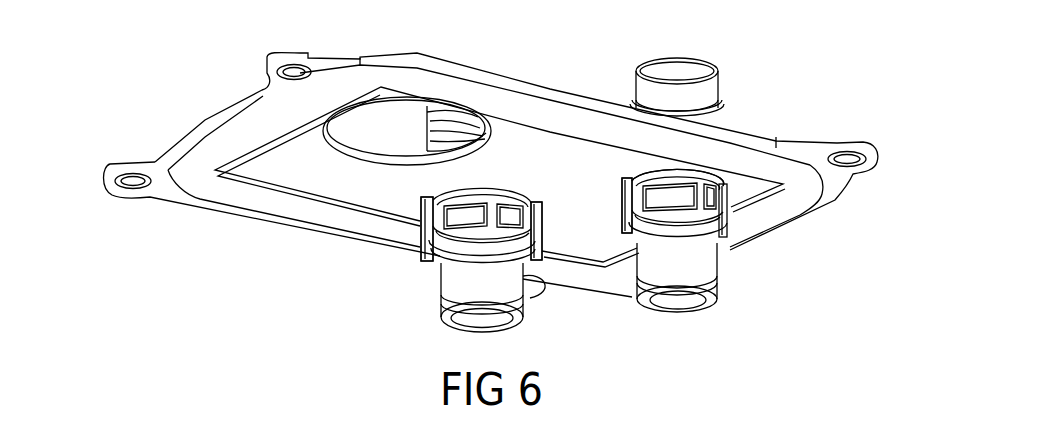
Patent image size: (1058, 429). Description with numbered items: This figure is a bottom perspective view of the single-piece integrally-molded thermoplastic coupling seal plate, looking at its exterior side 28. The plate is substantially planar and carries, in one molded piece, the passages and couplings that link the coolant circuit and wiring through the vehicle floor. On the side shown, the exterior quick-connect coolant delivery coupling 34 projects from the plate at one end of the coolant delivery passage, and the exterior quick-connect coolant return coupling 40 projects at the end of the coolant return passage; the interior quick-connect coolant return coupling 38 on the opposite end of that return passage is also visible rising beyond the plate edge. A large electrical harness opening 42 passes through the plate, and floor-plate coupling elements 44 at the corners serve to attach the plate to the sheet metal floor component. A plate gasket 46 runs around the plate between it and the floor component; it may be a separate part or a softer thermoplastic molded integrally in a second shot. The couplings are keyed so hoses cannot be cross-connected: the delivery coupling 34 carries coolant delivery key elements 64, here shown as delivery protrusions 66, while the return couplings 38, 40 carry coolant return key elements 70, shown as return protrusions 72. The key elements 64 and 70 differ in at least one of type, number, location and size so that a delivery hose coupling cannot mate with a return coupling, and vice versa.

The exterior side 28 is at (541, 161).
The exterior quick-connect coolant delivery coupling 34 is at (440, 263).
The interior quick-connect coolant return coupling 38 is at (708, 108).
The exterior quick-connect coolant return coupling 40 is at (719, 250).
The electrical harness opening 42 is at (352, 147).
The floor-plate coupling elements 44 is at (105, 162).
The plate gasket 46 is at (284, 203).
The coolant delivery key elements 64 is at (421, 231).
The delivery protrusions 66 is at (421, 251).
The coolant return key elements 70 is at (608, 190).
The return protrusions 72 is at (622, 205).